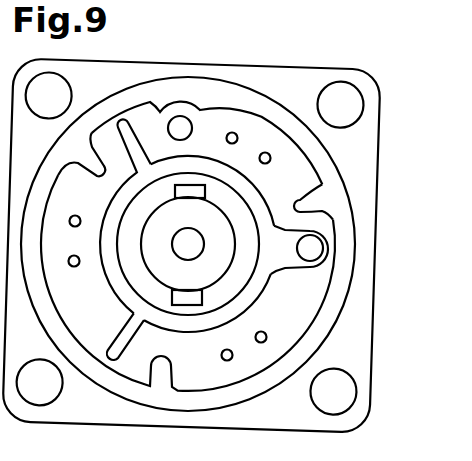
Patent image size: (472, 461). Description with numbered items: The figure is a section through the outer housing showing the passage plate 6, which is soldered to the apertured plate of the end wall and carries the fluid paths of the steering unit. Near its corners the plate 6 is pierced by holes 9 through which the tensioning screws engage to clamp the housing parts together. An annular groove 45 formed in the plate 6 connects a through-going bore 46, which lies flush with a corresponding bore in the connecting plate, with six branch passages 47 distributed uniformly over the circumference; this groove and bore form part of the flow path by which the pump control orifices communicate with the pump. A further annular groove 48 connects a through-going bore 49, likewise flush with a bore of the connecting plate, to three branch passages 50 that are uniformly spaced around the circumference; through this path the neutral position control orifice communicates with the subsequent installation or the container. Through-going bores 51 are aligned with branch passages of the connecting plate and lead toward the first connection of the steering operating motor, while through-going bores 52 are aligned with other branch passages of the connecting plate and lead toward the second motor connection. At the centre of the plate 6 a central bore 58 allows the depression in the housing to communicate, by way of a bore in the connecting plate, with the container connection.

The passage plate 6 is at (268, 77).
The holes 9 is at (339, 92).
The annular groove 45 is at (229, 96).
The through-going bore 46 is at (178, 125).
The branch passages 47 is at (301, 208).
The further annular groove 48 is at (216, 267).
The through-going bore 49 is at (311, 252).
The branch passages 50 is at (114, 355).
The through-going bores 51 is at (269, 163).
The through-going bores 52 is at (235, 135).
The central bore 58 is at (188, 252).